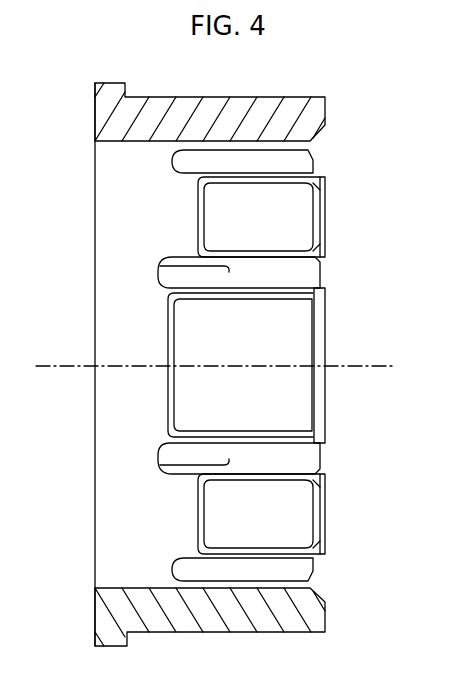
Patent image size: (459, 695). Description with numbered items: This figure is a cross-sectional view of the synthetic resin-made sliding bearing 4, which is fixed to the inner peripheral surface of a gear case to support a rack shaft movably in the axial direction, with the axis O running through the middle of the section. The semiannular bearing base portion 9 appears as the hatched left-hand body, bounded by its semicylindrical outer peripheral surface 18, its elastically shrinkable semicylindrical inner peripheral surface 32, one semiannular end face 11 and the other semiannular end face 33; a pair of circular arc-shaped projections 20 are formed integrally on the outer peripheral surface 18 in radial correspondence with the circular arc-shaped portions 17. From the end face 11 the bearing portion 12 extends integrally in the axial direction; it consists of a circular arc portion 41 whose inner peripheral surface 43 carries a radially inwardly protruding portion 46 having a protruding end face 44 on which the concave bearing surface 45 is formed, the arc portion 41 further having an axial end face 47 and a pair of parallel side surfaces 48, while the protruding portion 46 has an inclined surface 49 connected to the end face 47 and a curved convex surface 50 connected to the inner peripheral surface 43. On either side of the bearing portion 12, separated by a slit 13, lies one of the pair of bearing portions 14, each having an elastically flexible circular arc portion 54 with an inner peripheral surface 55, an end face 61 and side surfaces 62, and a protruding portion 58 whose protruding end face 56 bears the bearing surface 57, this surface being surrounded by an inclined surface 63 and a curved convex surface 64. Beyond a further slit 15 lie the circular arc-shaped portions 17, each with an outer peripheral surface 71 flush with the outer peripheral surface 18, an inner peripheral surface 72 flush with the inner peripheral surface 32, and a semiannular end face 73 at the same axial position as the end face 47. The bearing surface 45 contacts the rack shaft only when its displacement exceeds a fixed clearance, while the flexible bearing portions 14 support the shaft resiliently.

The sliding bearing 4 is at (84, 596).
The bearing base portion 9 is at (112, 113).
The end face 11 is at (165, 450).
The bearing portion 12 is at (334, 384).
The slit 13 is at (318, 269).
The bearing portion 14 is at (333, 219).
The slit 15 is at (316, 160).
The circular arc-shaped portion 17 is at (292, 99).
The outer peripheral surface 18 is at (140, 97).
The circular arc-shaped projection 20 is at (106, 90).
The inner peripheral surface 32 is at (112, 205).
The end face 33 is at (95, 416).
The circular arc portion 41 is at (319, 418).
The inner peripheral surface 43 is at (162, 325).
The protruding end face 44 is at (270, 310).
The bearing surface 45 is at (293, 398).
The protruding portion 46 is at (272, 332).
The end face 47 is at (325, 350).
The side surface 48 is at (292, 284).
The inclined surface 49 is at (318, 316).
The curved convex surface 50 is at (168, 383).
The circular arc portion 54 is at (320, 195).
The inner peripheral surface 55 is at (190, 200).
The protruding end face 56 is at (300, 229).
The bearing surface 57 is at (298, 206).
The protruding portion 58 is at (307, 241).
The end face 61 is at (322, 183).
The side surface 62 is at (226, 173).
The inclined surface 63 is at (325, 243).
The curved convex surface 64 is at (255, 183).
The outer peripheral surface 71 is at (311, 99).
The inner peripheral surface 72 is at (327, 112).
The end face 73 is at (320, 134).
The axis O is at (68, 366).